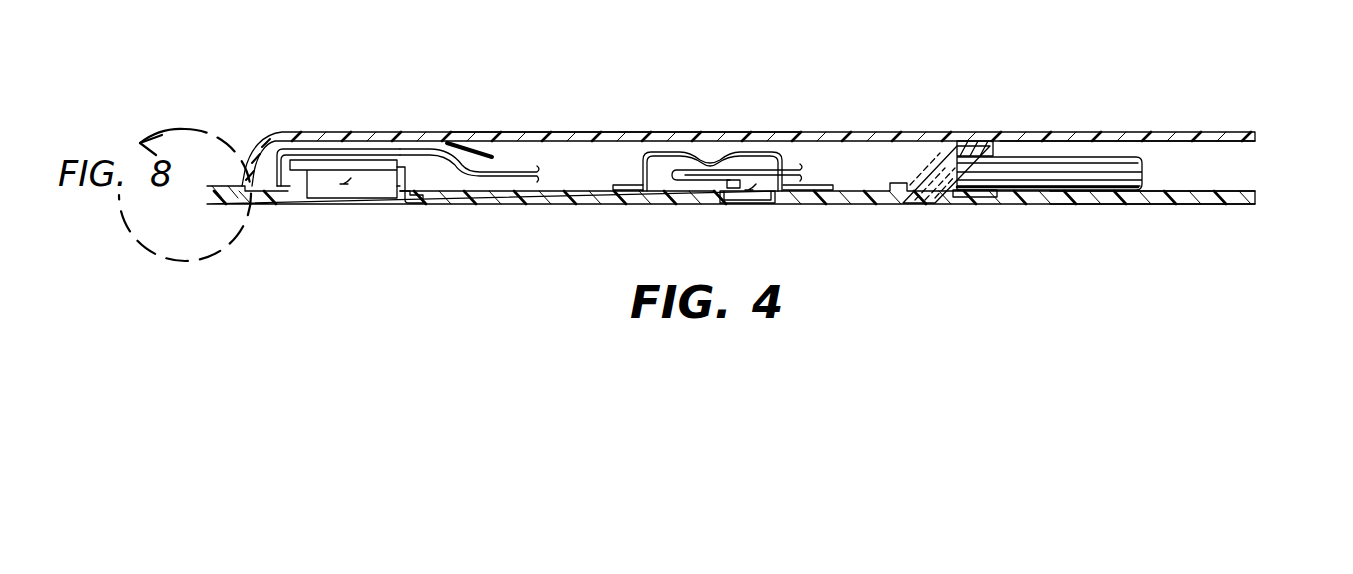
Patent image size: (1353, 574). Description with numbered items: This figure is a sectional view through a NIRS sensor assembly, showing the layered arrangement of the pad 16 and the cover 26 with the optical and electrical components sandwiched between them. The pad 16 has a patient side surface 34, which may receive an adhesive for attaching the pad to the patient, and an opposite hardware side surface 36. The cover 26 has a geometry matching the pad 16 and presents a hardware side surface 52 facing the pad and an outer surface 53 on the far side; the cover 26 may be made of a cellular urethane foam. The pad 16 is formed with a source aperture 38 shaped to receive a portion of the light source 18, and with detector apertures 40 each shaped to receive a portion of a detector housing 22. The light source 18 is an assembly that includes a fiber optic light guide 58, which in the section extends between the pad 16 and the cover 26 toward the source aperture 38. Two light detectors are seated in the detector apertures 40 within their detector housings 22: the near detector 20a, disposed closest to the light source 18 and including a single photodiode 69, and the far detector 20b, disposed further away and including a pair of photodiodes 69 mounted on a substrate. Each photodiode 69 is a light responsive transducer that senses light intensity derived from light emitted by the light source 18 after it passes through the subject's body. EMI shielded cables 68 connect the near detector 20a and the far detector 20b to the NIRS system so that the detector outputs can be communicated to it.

The pad 16 is at (1257, 207).
The light source 18 is at (918, 206).
The near detector 20a is at (743, 215).
The far detector 20b is at (342, 210).
The detector housing 22 is at (492, 152).
The cover 26 is at (1255, 131).
The patient side surface 34 is at (1197, 204).
The hardware side surface 36 is at (1237, 193).
The source aperture 38 is at (912, 207).
The detector aperture 40 is at (405, 207).
The hardware side surface 52 is at (1225, 158).
The outer surface 53 is at (1007, 133).
The fiber optic light guide 58 is at (1130, 153).
The EMI shielded cable 68 is at (510, 178).
The photodiode 69 is at (350, 182).